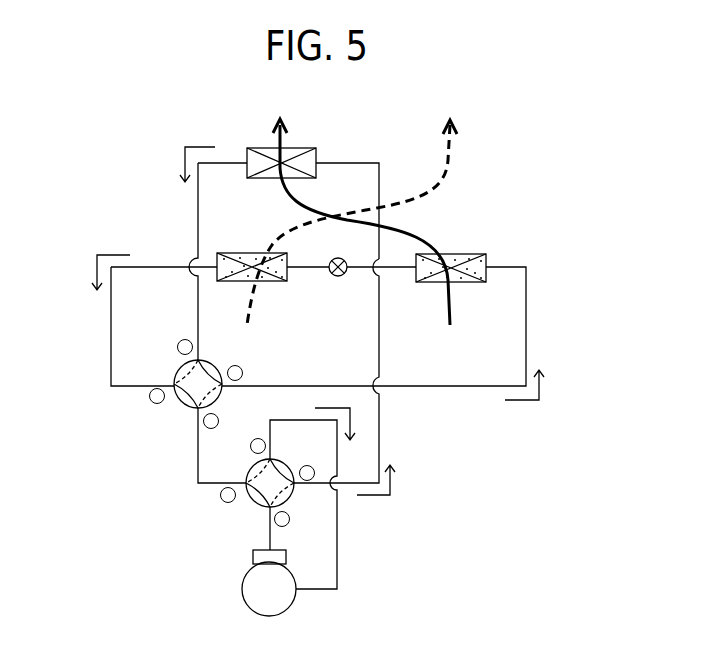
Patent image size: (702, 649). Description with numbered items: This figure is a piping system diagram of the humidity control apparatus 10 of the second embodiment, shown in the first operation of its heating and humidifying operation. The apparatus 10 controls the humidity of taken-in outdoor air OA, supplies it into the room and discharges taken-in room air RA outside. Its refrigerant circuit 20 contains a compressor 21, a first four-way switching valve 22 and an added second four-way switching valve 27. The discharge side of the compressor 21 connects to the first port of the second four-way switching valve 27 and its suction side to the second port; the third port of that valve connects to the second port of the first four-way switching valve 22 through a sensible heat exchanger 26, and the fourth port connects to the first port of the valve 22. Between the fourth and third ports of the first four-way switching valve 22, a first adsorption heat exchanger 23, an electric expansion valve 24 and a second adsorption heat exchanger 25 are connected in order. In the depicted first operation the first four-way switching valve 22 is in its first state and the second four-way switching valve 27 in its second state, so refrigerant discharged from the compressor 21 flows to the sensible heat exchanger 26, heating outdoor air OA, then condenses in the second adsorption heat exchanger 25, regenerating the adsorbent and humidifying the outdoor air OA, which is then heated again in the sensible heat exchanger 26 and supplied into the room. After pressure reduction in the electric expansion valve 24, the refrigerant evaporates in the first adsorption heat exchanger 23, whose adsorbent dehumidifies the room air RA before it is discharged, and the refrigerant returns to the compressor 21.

The humidity control apparatus 10 is at (140, 148).
The refrigerant circuit 20 is at (528, 331).
The compressor 21 is at (240, 590).
The first four-way switching valve 22 is at (185, 408).
The first adsorption heat exchanger 23 is at (235, 253).
The electric expansion valve 24 is at (337, 280).
The second adsorption heat exchanger 25 is at (466, 254).
The sensible heat exchanger 26 is at (317, 156).
The second four-way switching valve 27 is at (253, 506).